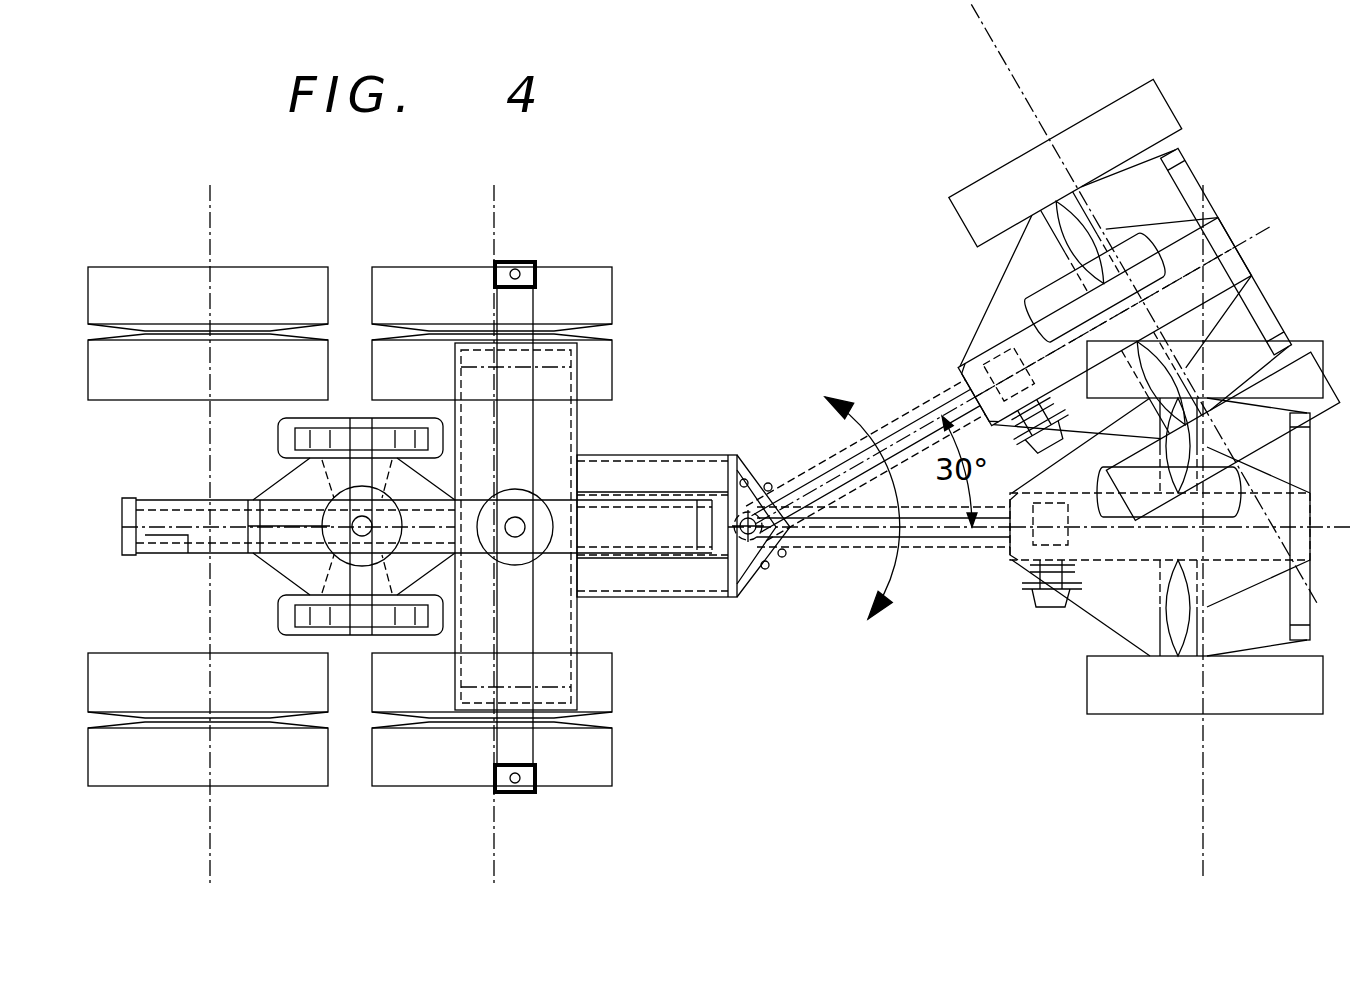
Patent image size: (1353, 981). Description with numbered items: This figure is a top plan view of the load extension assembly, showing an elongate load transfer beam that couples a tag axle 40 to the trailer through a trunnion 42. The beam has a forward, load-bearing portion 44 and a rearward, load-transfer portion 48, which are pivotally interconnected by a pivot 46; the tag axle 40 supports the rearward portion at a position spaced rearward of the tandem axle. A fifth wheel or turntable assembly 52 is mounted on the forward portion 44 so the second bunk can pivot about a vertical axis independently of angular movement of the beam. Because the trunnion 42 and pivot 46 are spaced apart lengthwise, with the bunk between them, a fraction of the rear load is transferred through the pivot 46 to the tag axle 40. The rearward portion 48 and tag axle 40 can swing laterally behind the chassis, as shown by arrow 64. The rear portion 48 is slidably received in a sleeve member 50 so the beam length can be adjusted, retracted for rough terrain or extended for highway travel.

The tag axle 40 is at (1142, 716).
The trunnion 42 is at (350, 630).
The forward, load-bearing portion 44 is at (648, 455).
The pivot 46 is at (770, 536).
The rearward, load-transfer portion 48 is at (903, 548).
The sleeve member 50 is at (1098, 618).
The fifth wheel or turntable assembly 52 is at (580, 621).
The arrow 64 is at (836, 393).